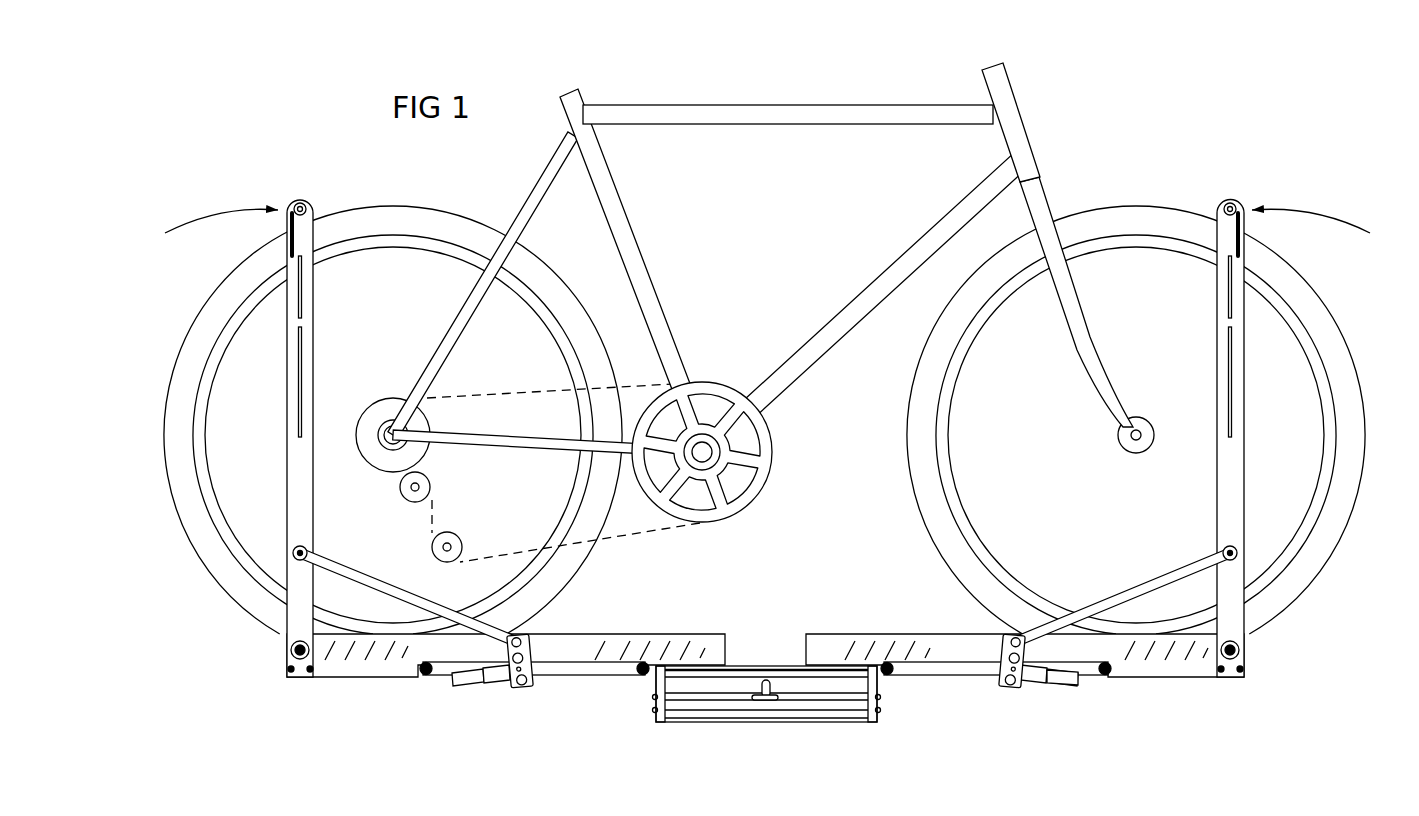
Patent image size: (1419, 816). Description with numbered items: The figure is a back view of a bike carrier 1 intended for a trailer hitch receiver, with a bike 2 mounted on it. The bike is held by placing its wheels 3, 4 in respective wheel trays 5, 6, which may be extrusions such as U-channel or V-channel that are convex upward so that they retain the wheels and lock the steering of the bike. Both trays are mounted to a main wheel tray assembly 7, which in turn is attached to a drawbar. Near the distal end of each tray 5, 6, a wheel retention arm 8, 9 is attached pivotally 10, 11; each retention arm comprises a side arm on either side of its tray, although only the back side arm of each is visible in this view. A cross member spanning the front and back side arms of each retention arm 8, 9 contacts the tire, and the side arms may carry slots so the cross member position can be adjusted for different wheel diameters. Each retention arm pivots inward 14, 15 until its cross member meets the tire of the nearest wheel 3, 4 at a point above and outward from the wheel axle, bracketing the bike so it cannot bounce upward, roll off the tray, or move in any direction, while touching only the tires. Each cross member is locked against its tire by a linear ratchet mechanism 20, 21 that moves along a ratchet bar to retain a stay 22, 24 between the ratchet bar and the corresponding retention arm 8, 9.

The bike carrier 1 is at (767, 457).
The bike 2 is at (764, 348).
The wheel 3 is at (400, 215).
The wheel 4 is at (1134, 215).
The wheel tray 5 is at (387, 670).
The wheel tray 6 is at (1142, 670).
The main wheel tray assembly 7 is at (886, 704).
The wheel retention arm 8 is at (253, 416).
The wheel retention arm 9 is at (1280, 416).
The pivot 10 is at (290, 652).
The pivot 11 is at (1243, 652).
The inward pivoting direction 14 is at (220, 222).
The inward pivoting direction 15 is at (1318, 222).
The linear ratchet mechanism 20 is at (515, 702).
The linear ratchet mechanism 21 is at (1015, 702).
The stay 22 is at (365, 582).
The stay 24 is at (1150, 582).